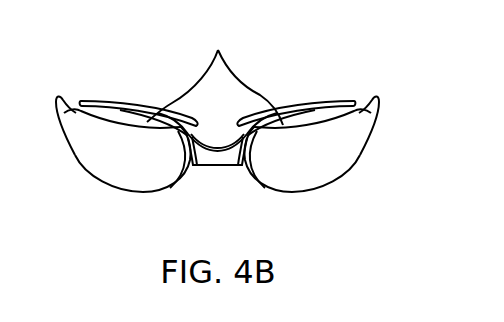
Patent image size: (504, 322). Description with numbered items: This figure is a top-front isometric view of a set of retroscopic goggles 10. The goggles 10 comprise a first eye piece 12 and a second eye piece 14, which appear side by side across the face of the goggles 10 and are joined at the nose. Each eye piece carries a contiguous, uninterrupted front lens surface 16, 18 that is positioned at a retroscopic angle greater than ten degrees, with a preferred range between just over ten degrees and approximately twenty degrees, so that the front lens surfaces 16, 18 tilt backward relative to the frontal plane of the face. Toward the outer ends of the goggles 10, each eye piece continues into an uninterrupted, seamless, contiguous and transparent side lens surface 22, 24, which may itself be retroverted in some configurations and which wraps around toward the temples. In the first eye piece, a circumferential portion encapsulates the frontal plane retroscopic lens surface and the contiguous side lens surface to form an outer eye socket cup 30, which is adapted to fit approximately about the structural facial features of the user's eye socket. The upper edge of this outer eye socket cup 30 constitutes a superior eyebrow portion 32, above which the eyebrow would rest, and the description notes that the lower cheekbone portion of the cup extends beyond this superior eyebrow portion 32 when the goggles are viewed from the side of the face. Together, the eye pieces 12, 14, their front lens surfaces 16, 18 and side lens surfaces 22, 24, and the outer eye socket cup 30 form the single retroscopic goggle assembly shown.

The goggles 10 is at (292, 48).
The first eye piece 12 is at (320, 94).
The second eye piece 14 is at (120, 98).
The front lens surface 16 is at (272, 173).
The front lens surface 18 is at (163, 173).
The side lens surface 22 is at (360, 135).
The side lens surface 24 is at (73, 132).
The outer eye socket cup 30 is at (53, 50).
The superior eyebrow portion 32 is at (218, 50).